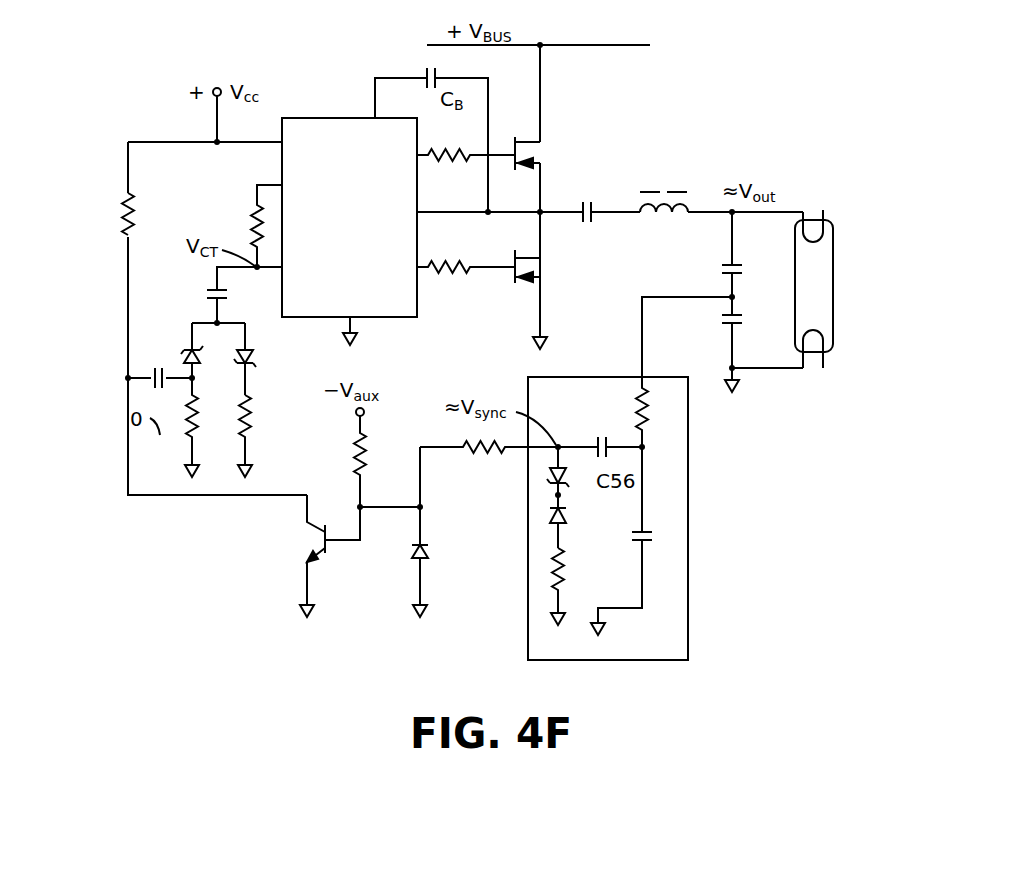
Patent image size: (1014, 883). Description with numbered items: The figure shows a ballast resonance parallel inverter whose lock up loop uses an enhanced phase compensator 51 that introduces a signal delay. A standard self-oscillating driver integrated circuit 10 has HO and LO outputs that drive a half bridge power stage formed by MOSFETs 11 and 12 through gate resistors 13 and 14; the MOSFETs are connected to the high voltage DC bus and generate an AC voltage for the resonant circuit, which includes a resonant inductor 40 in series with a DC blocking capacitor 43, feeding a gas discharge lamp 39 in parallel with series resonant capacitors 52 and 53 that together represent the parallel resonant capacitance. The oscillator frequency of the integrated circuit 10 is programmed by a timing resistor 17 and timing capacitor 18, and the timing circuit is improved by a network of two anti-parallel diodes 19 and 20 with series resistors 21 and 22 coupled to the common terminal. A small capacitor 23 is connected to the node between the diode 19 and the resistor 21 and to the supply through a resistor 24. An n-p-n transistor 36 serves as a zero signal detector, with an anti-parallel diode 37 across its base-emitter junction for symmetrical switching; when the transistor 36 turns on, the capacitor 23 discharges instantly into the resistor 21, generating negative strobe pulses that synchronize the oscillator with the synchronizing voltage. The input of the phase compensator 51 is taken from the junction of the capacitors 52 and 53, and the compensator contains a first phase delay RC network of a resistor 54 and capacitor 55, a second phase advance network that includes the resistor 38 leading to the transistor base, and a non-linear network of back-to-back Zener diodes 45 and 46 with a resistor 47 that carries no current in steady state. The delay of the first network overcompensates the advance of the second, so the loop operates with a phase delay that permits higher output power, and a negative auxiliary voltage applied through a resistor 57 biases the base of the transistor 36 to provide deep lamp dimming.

The self-oscillating driver integrated circuit 10 is at (355, 218).
The MOSFET 11 is at (530, 160).
The MOSFET 12 is at (530, 272).
The gate resistor 13 is at (452, 168).
The gate resistor 14 is at (452, 278).
The timing resistor 17 is at (250, 228).
The timing capacitor 18 is at (207, 294).
The diode 19 is at (186, 356).
The diode 20 is at (255, 360).
The resistor 21 is at (183, 440).
The resistor 22 is at (258, 422).
The capacitor 23 is at (150, 376).
The resistor 24 is at (140, 218).
The n-p-n transistor 36 is at (327, 556).
The anti-parallel diode 37 is at (442, 549).
The resistor 38 is at (472, 453).
The gas discharge lamp 39 is at (808, 205).
The resonant inductor 40 is at (663, 191).
The DC blocking capacitor 43 is at (593, 222).
The Zener diode 45 is at (562, 478).
The Zener diode 46 is at (566, 514).
The resistor 47 is at (567, 579).
The phase compensator 51 is at (580, 377).
The resonant capacitor 52 is at (722, 267).
The resonant capacitor 53 is at (722, 322).
The resistor 54 is at (631, 408).
The capacitor 55 is at (651, 537).
The resistor 57 is at (353, 450).